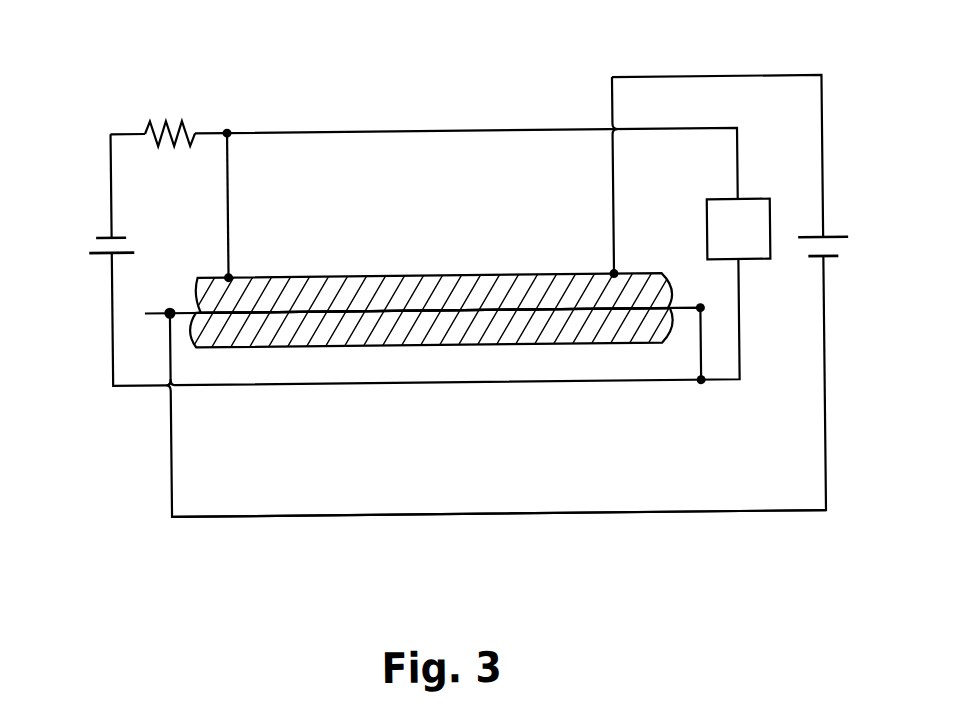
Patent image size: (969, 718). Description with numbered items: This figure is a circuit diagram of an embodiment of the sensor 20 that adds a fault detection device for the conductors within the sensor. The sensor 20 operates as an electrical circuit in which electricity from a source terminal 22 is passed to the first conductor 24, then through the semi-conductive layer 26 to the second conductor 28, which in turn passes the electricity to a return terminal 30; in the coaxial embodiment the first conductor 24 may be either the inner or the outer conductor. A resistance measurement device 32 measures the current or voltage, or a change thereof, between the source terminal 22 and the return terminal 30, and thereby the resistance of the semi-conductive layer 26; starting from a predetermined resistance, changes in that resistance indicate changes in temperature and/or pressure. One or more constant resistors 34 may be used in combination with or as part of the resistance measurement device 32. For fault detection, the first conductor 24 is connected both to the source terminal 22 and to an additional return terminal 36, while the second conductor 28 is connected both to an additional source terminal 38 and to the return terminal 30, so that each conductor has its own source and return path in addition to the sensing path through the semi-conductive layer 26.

The sensor 20 is at (299, 82).
The source terminal 22 is at (110, 167).
The first conductor 24 is at (289, 275).
The semi-conductive layer 26 is at (476, 292).
The second conductor 28 is at (540, 316).
The return terminal 30 is at (108, 322).
The resistance measurement device 32 is at (747, 243).
The constant resistor 34 is at (173, 118).
The return terminal 36 is at (688, 78).
The source terminal 38 is at (688, 515).